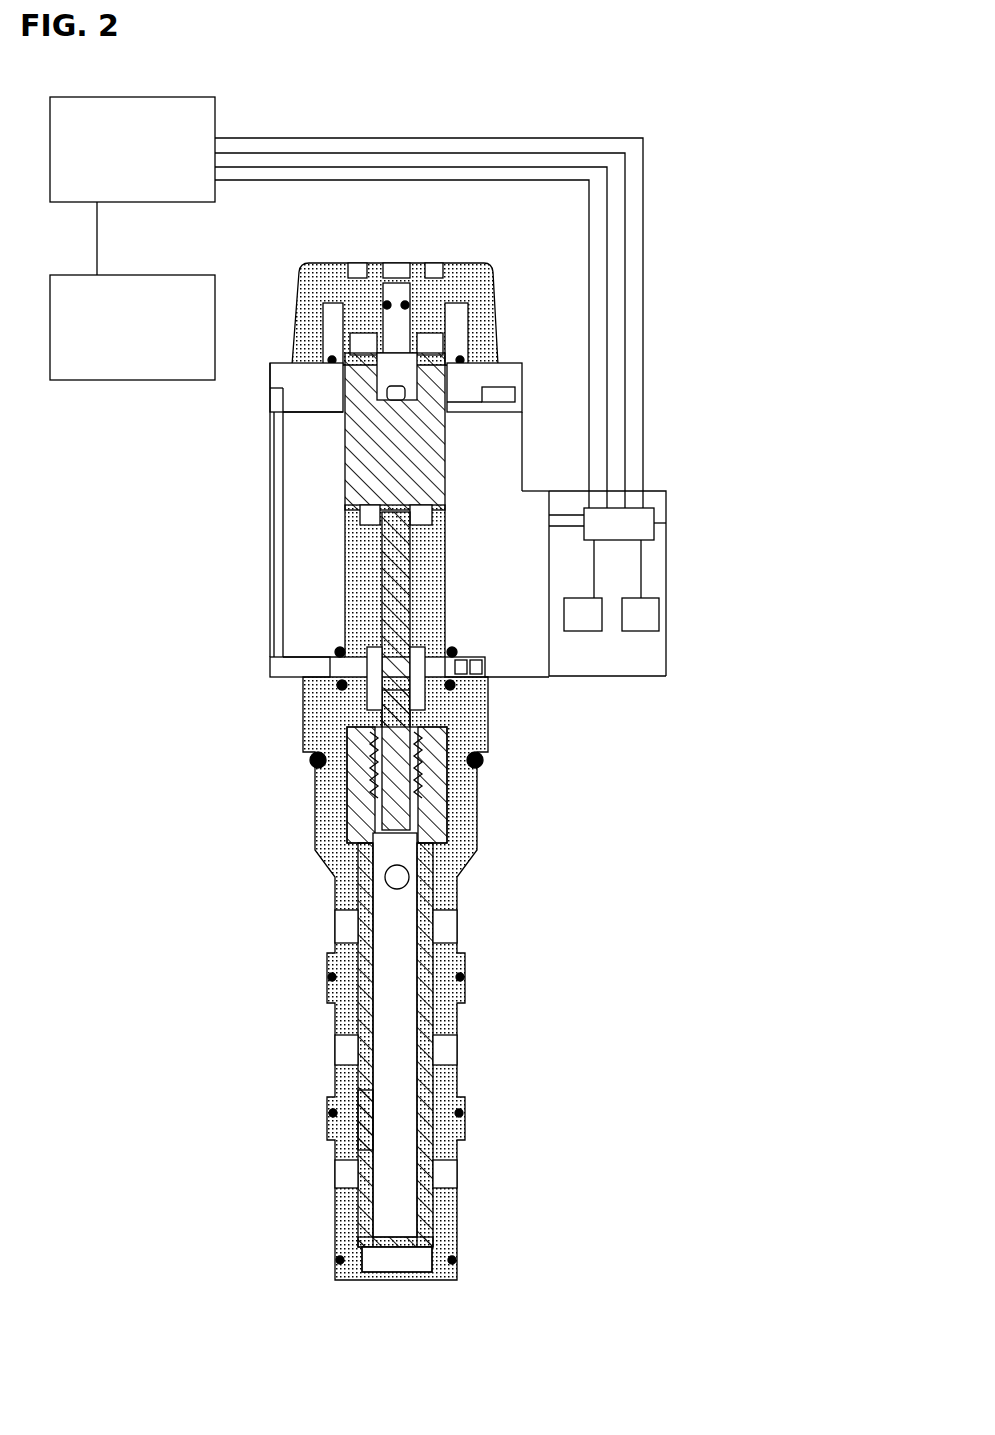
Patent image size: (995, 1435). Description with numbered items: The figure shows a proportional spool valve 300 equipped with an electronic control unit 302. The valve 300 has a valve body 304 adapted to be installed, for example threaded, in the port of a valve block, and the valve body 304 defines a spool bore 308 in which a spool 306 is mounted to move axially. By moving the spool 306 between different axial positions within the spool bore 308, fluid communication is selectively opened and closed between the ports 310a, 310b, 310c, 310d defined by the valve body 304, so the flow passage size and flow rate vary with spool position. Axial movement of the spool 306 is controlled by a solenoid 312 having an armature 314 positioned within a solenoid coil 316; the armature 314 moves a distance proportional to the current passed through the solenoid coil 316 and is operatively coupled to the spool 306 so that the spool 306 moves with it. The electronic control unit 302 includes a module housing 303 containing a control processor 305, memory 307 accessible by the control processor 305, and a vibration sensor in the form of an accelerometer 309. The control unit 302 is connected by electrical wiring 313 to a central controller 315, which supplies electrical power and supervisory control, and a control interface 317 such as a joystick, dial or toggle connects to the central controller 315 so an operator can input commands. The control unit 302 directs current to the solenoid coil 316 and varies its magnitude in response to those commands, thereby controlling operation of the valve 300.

The proportional spool valve 300 is at (148, 721).
The electronic control unit 302 is at (685, 586).
The module housing 303 is at (658, 490).
The valve body 304 is at (335, 882).
The control processor 305 is at (666, 523).
The spool 306 is at (427, 1010).
The memory 307 is at (585, 631).
The spool bore 308 is at (362, 1125).
The accelerometer 309 is at (642, 631).
The port 310a is at (398, 1262).
The port 310b is at (440, 1178).
The port 310c is at (440, 1047).
The port 310d is at (443, 922).
The solenoid 312 is at (252, 542).
The electrical wiring 313 is at (340, 137).
The armature 314 is at (340, 438).
The central controller 315 is at (190, 97).
The solenoid coil 316 is at (283, 487).
The control interface 317 is at (180, 275).